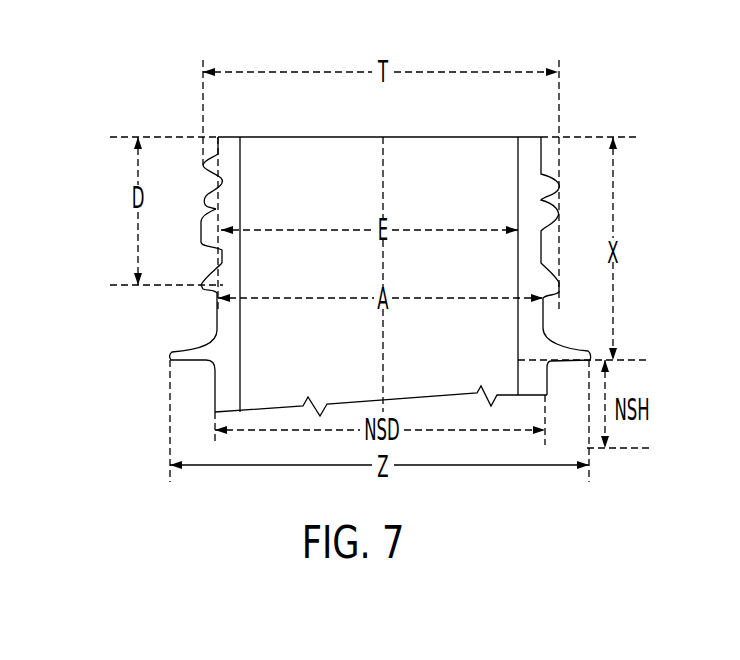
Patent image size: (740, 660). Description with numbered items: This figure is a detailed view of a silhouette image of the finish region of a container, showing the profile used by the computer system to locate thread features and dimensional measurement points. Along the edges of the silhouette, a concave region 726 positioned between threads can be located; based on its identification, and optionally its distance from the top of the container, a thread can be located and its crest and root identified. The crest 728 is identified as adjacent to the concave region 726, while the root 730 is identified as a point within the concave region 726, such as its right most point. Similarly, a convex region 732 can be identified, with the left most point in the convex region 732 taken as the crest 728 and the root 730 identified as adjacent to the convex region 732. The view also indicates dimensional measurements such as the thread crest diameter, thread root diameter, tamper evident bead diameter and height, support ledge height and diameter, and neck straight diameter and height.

The concave region 726 is at (212, 180).
The crest 728 is at (210, 172).
The root 730 is at (214, 178).
The convex region 732 is at (203, 162).